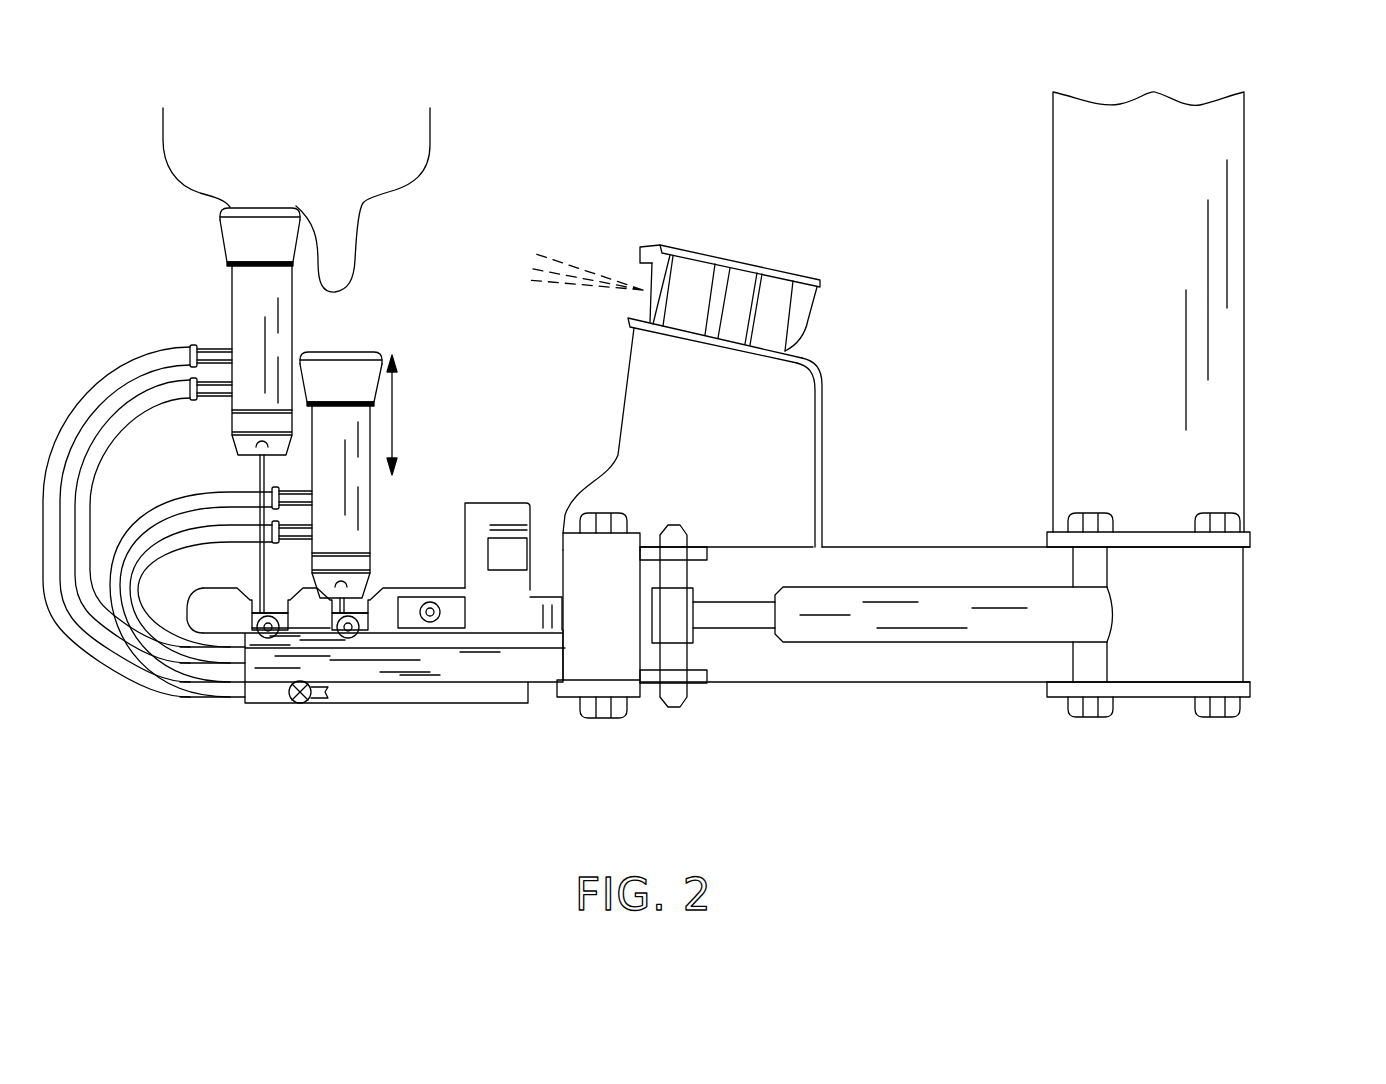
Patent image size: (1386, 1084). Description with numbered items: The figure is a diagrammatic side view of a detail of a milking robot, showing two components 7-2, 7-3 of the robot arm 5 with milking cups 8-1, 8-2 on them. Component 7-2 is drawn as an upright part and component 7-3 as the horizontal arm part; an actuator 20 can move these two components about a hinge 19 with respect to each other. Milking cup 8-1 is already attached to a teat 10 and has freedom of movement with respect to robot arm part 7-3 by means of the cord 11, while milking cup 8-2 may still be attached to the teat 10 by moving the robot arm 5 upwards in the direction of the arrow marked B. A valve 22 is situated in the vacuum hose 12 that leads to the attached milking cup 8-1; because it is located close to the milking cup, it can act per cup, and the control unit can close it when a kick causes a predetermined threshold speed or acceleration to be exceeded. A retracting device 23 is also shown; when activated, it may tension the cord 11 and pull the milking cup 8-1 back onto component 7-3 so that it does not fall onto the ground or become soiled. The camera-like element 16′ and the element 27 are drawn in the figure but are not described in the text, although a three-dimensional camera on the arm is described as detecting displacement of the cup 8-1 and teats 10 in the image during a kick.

The robot arm 5 is at (1015, 327).
The robot arm component 7-2 is at (1243, 330).
The robot arm part 7-3 is at (958, 683).
The milking cup 8-1 is at (243, 330).
The milking cup 8-2 is at (360, 468).
The teat 10 is at (342, 253).
The cord 11 is at (263, 480).
The vacuum hose 12 is at (65, 607).
The bucket 16′ is at (758, 275).
The hinge 19 is at (1090, 707).
The actuator 20 is at (937, 613).
The valve 22 is at (307, 693).
The retracting device 23 is at (440, 616).
The block 27 is at (510, 553).